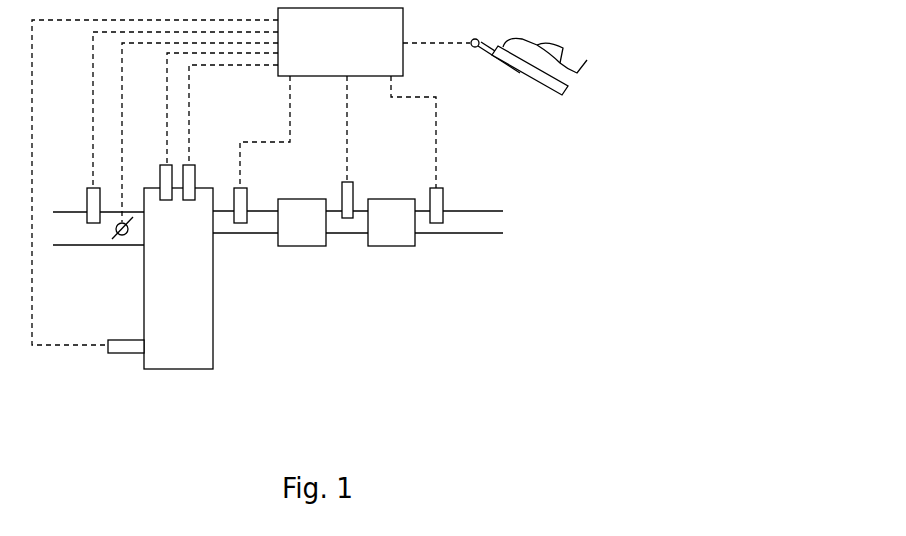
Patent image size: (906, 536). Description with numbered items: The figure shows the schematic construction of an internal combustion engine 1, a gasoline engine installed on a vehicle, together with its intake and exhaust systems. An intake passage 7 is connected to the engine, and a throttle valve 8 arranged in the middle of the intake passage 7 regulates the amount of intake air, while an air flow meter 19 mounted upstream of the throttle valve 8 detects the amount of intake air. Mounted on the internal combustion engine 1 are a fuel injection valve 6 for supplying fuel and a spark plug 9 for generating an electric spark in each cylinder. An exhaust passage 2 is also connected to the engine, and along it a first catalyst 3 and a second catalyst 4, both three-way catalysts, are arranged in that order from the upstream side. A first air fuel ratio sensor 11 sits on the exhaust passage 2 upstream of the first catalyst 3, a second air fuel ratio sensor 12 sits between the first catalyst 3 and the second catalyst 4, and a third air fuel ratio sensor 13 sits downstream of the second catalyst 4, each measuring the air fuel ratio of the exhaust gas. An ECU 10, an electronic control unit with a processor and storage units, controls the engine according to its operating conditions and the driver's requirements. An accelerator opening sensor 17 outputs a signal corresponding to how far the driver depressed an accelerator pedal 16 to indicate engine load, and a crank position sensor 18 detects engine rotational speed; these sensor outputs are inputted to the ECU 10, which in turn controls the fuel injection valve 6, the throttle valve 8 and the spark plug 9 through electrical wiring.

The internal combustion engine 1 is at (213, 344).
The exhaust passage 2 is at (348, 233).
The first catalyst 3 is at (300, 246).
The second catalyst 4 is at (389, 246).
The fuel injection valve 6 is at (197, 176).
The intake passage 7 is at (93, 247).
The throttle valve 8 is at (122, 246).
The spark plug 9 is at (160, 176).
The ECU 10 is at (280, 77).
The first air fuel ratio sensor 11 is at (248, 196).
The second air fuel ratio sensor 12 is at (354, 190).
The third air fuel ratio sensor 13 is at (444, 196).
The accelerator pedal 16 is at (528, 76).
The accelerator opening sensor 17 is at (472, 46).
The crank position sensor 18 is at (128, 340).
The air flow meter 19 is at (90, 190).